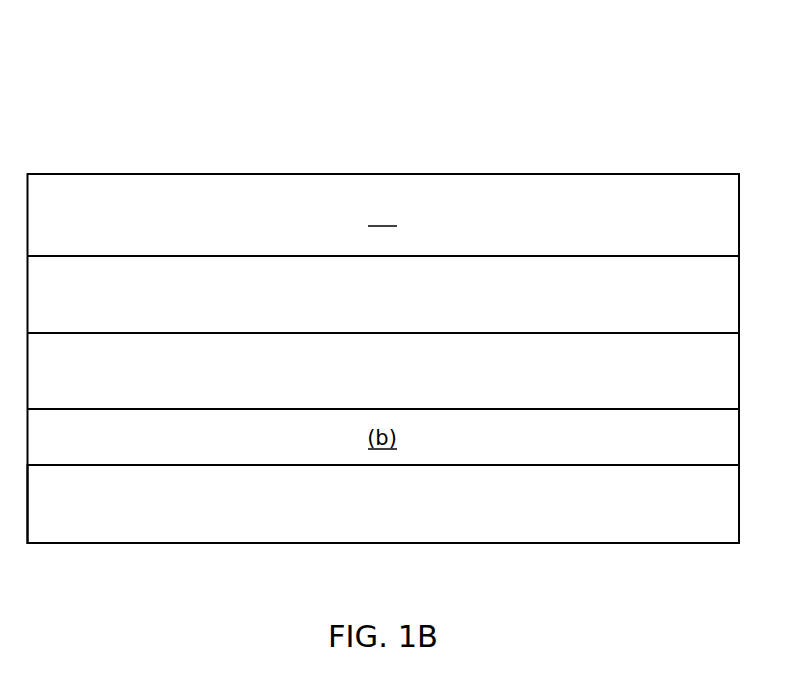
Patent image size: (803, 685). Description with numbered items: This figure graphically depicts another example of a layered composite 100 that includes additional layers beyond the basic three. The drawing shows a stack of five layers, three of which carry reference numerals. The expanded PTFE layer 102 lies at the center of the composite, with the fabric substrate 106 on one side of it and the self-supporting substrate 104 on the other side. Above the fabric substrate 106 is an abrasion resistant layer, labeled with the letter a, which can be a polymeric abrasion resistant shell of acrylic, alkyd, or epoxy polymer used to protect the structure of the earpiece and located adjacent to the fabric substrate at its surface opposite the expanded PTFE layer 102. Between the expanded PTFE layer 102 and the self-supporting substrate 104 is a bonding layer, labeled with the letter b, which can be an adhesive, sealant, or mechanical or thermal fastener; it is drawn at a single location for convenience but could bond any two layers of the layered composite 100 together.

The layered composite 100 is at (150, 93).
The fabric substrate 106 is at (402, 306).
The expanded PTFE layer 102 is at (402, 386).
The self-supporting substrate 104 is at (402, 512).